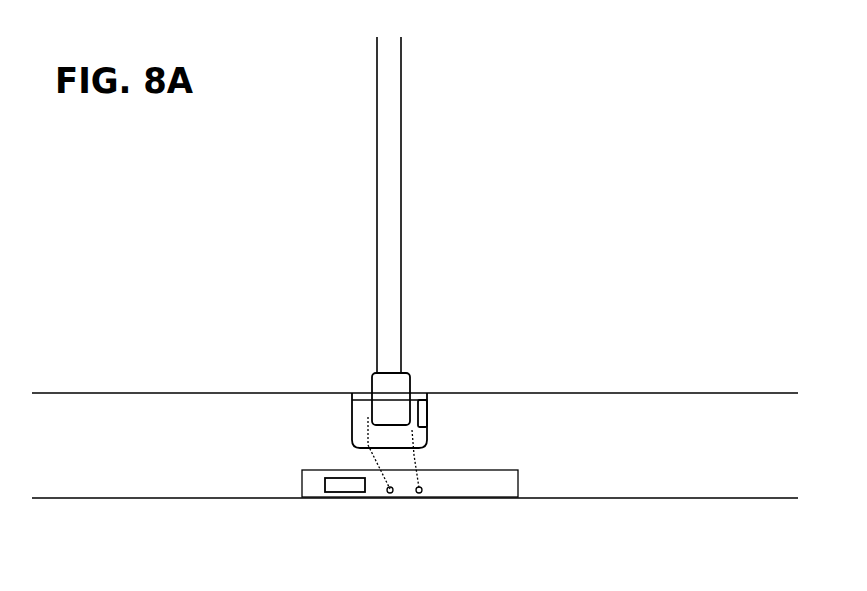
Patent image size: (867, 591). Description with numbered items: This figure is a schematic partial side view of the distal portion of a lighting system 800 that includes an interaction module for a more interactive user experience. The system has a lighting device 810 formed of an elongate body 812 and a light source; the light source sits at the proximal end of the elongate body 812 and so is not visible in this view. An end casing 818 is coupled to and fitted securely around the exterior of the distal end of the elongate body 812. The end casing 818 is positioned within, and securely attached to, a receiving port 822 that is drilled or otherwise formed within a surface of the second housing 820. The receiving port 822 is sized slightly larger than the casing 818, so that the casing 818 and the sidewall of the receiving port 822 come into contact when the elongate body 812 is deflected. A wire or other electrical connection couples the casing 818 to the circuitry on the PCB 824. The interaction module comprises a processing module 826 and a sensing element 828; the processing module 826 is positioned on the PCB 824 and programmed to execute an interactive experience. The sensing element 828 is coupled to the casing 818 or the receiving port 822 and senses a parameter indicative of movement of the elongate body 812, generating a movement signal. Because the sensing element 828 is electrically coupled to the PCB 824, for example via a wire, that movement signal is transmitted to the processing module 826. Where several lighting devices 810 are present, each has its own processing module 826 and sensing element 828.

The lighting system 800 is at (653, 88).
The lighting device 810 is at (408, 142).
The elongate body 812 is at (392, 206).
The end casing 818 is at (403, 378).
The second housing 820 is at (287, 418).
The receiving port 822 is at (357, 405).
The PCB 824 is at (480, 488).
The processing module 826 is at (347, 485).
The sensing element 828 is at (427, 417).